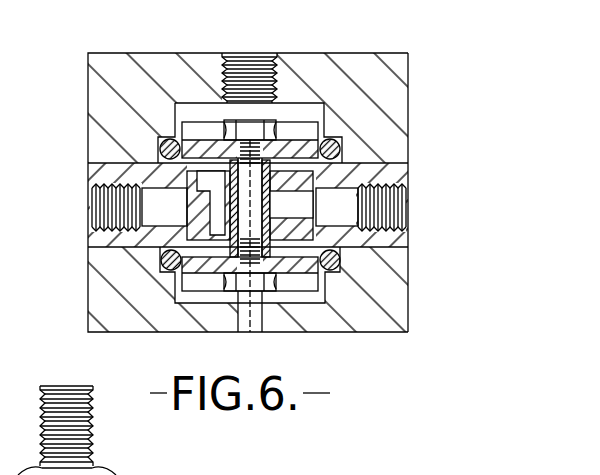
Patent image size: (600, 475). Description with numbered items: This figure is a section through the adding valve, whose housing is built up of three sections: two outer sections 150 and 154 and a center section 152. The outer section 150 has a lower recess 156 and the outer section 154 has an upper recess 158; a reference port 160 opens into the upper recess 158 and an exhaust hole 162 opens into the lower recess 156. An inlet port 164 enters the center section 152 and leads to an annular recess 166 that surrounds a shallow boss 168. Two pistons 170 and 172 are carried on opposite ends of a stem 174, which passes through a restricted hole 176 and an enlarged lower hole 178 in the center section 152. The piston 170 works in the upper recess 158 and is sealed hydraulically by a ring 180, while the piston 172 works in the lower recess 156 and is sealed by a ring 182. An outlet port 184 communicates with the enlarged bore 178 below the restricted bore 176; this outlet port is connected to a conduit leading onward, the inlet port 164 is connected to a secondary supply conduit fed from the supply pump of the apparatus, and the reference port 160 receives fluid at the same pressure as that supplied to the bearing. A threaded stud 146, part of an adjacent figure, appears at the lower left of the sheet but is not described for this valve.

The threaded stud 146 is at (136, 474).
The outer housing section 150 is at (104, 297).
The center housing section 152 is at (128, 246).
The outer housing section 154 is at (398, 104).
The lower recess 156 is at (190, 304).
The upper recess 158 is at (193, 112).
The reference port 160 is at (253, 84).
The exhaust hole 162 is at (258, 321).
The inlet port 164 is at (94, 228).
The annular recess 166 is at (278, 167).
The shallow boss 168 is at (337, 207).
The piston 170 is at (291, 147).
The piston 172 is at (216, 275).
The stem 174 is at (247, 306).
The restricted hole 176 is at (223, 166).
The enlarged lower hole 178 is at (286, 275).
The ring 180 is at (341, 141).
The ring 182 is at (343, 262).
The outlet port 184 is at (405, 208).